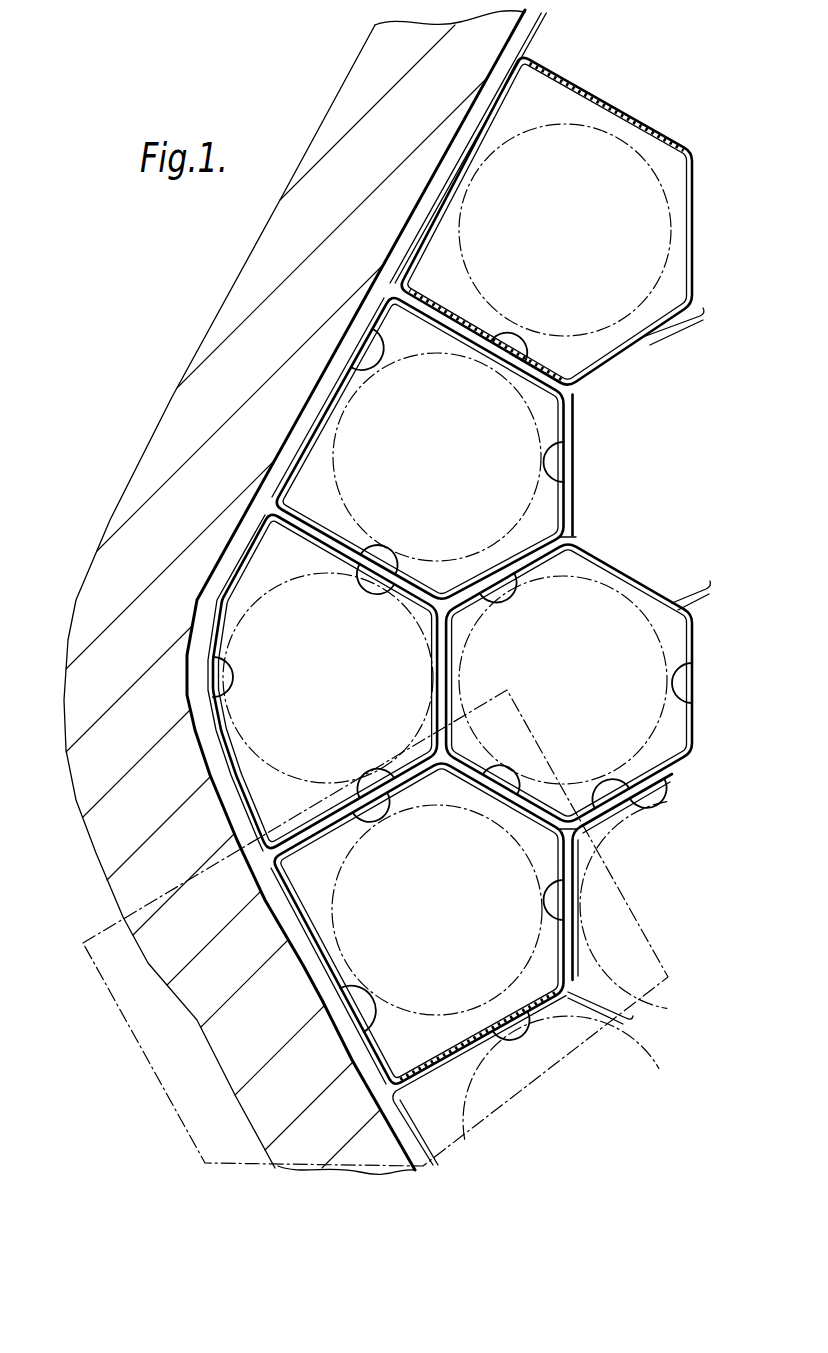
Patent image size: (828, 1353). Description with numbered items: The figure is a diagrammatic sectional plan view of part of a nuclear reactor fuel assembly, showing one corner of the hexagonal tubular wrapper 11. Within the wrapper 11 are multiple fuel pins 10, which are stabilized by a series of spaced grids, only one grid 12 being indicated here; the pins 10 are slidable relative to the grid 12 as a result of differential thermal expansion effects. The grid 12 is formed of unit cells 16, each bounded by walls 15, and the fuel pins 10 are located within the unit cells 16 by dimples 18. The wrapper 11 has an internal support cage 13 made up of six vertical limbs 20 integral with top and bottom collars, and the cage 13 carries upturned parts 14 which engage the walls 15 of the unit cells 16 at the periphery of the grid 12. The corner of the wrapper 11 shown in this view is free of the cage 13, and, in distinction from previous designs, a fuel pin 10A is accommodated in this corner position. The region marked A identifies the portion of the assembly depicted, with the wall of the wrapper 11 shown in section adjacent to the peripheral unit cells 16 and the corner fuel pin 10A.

The fuel pin 10 is at (647, 610).
The corner fuel pin 10A is at (305, 565).
The hexagonal tubular wrapper 11 is at (197, 985).
The grid 12 is at (616, 526).
The internal support cage 13 is at (535, 25).
The upturned part 14 is at (577, 98).
The wall 15 is at (567, 92).
The unit cell 16 is at (694, 270).
The dimple 18 is at (513, 580).
The vertical limb 20 is at (391, 282).
The detail region A is at (106, 980).